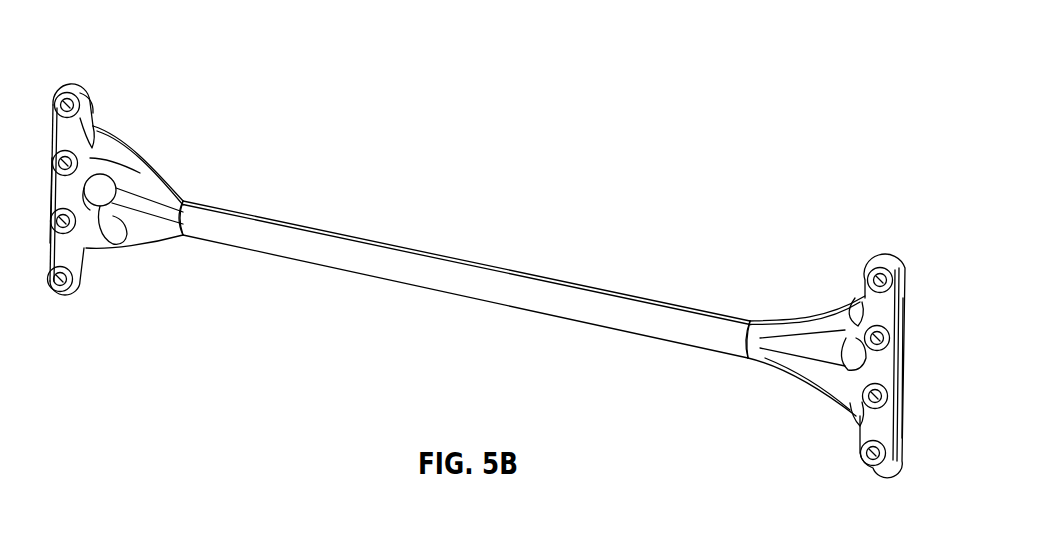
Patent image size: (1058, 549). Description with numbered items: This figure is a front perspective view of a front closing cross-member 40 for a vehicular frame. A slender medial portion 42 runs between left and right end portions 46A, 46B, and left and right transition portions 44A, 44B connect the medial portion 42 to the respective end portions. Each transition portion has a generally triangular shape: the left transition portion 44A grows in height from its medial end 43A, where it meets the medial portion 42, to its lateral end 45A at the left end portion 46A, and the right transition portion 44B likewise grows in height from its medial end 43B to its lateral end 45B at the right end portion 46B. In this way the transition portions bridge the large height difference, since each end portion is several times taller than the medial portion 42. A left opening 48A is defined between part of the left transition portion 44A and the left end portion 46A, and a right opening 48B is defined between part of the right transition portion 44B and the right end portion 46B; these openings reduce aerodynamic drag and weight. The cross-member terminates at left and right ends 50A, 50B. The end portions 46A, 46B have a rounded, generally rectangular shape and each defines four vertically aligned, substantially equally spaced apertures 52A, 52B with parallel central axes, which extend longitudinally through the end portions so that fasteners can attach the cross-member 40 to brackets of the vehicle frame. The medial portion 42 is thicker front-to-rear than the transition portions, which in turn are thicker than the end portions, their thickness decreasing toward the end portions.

The front closing cross-member 40 is at (649, 147).
The medial portion 42 is at (445, 275).
The medial end of the left transition portion 43A is at (749, 357).
The medial end of the right transition portion 43B is at (196, 201).
The left transition portion 44A is at (747, 263).
The right transition portion 44B is at (92, 77).
The lateral end of the left transition portion 45A is at (856, 414).
The lateral end of the right transition portion 45B is at (98, 133).
The left end portion 46A is at (863, 236).
The right end portion 46B is at (52, 53).
The left opening 48A is at (855, 360).
The right opening 48B is at (102, 200).
The left end 50A is at (893, 437).
The right end 50B is at (50, 243).
The apertures 52A is at (874, 456).
The apertures 52B is at (62, 285).